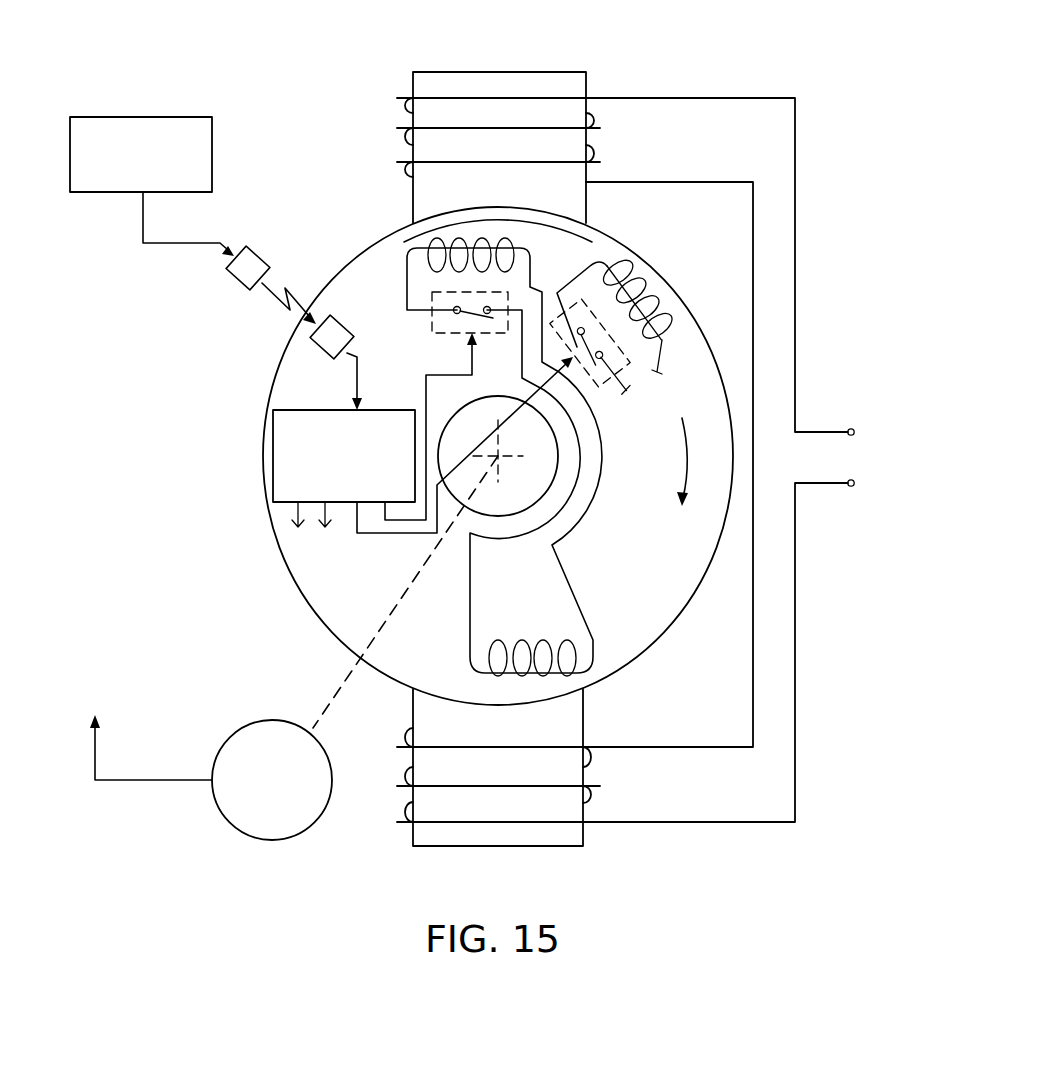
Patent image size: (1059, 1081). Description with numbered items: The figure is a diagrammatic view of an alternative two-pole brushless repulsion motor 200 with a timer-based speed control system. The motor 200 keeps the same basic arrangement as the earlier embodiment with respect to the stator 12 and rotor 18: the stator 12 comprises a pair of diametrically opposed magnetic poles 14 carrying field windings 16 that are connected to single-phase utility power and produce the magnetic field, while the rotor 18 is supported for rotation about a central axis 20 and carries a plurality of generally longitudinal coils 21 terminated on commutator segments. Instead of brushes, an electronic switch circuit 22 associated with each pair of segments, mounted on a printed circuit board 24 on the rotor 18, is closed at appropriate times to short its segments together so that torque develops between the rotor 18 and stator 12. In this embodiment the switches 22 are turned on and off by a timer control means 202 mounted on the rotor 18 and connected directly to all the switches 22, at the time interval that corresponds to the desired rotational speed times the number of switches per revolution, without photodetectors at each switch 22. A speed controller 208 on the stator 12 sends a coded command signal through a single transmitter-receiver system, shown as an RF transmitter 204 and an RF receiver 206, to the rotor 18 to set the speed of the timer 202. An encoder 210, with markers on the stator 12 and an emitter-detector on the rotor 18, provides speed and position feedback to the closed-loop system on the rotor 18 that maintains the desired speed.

The stator 12 is at (495, 62).
The magnetic poles 14 is at (550, 82).
The field windings 16 is at (602, 152).
The rotor 18 is at (703, 330).
The central axis 20 is at (498, 456).
The coils 21 is at (512, 250).
The electronic switch circuit 22 is at (432, 323).
The printed circuit board 24 is at (672, 592).
The BLR motor 200 is at (691, 58).
The timer control means 202 is at (273, 485).
The RF transmitter 204 is at (247, 257).
The RF receiver 206 is at (320, 347).
The speed controller 208 is at (213, 142).
The encoder 210 is at (263, 842).